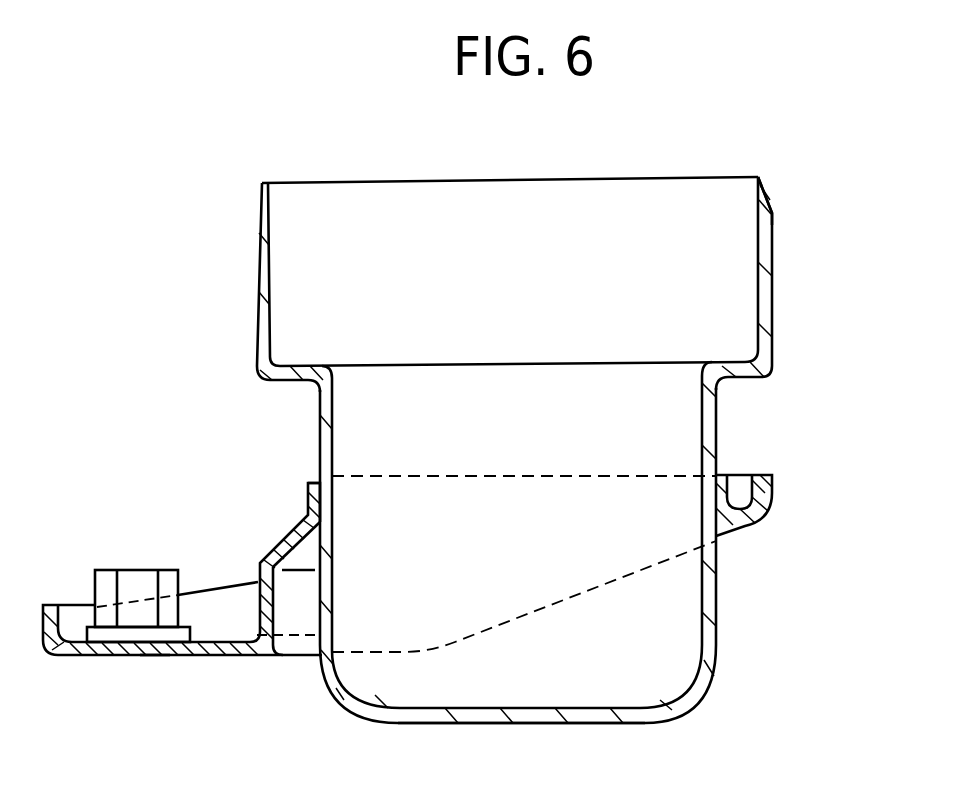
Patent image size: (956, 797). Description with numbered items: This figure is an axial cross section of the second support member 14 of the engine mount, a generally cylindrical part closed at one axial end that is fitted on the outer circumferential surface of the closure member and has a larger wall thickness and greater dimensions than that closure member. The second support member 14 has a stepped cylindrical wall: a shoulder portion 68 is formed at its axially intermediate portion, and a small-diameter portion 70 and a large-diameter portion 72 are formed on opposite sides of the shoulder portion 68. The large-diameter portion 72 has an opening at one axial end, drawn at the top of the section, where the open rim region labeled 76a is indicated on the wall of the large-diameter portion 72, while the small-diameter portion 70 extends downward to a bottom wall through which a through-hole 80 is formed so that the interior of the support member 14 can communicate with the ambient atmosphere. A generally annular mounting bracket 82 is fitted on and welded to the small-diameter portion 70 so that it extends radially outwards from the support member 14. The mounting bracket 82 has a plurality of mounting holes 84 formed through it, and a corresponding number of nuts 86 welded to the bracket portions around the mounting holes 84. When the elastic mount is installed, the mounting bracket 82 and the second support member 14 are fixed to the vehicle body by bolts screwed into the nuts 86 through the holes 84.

The second support member 14 is at (272, 98).
The large-diameter portion 72 is at (262, 297).
The cap lip 76a is at (764, 190).
The shoulder portion 68 is at (735, 370).
The through-hole 80 is at (526, 713).
The mounting bracket 82 is at (247, 680).
The small-diameter portion 70 is at (312, 528).
The mounting holes 84 is at (155, 656).
The nuts 86 is at (133, 580).